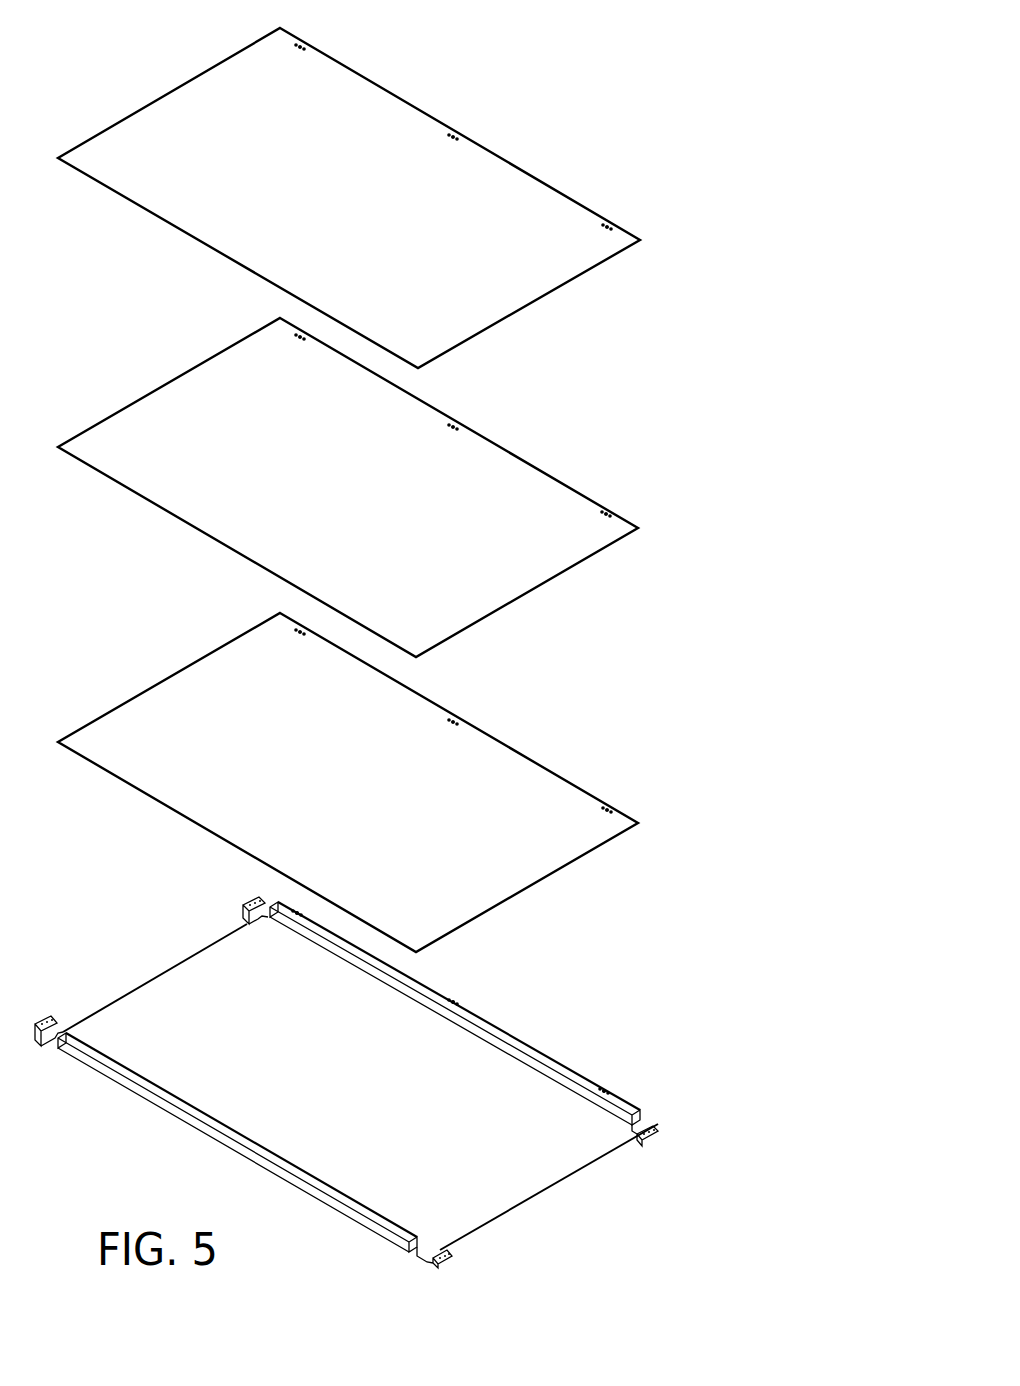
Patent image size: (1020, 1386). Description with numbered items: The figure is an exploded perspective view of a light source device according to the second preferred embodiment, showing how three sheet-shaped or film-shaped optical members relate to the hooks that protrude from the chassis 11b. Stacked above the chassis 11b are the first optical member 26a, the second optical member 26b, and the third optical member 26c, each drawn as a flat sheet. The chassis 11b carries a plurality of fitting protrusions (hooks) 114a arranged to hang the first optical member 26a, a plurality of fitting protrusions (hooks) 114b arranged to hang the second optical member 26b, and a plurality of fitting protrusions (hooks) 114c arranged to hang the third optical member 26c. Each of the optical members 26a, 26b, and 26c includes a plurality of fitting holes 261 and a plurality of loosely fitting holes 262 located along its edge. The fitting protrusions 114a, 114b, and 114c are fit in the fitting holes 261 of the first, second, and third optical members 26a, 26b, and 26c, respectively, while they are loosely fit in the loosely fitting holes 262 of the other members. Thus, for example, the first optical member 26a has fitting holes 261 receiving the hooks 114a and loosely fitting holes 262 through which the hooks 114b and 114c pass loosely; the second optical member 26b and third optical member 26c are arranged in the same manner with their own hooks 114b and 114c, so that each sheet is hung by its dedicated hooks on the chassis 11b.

The first optical member 26a is at (593, 850).
The second optical member 26b is at (597, 553).
The third optical member 26c is at (604, 262).
The fitting holes 261 is at (310, 44).
The loosely fitting holes 262 is at (301, 46).
The chassis 11b is at (582, 1167).
The fitting protrusions (hooks) 114a is at (297, 914).
The fitting protrusions (hooks) 114b is at (297, 913).
The fitting protrusions (hooks) 114c is at (297, 912).